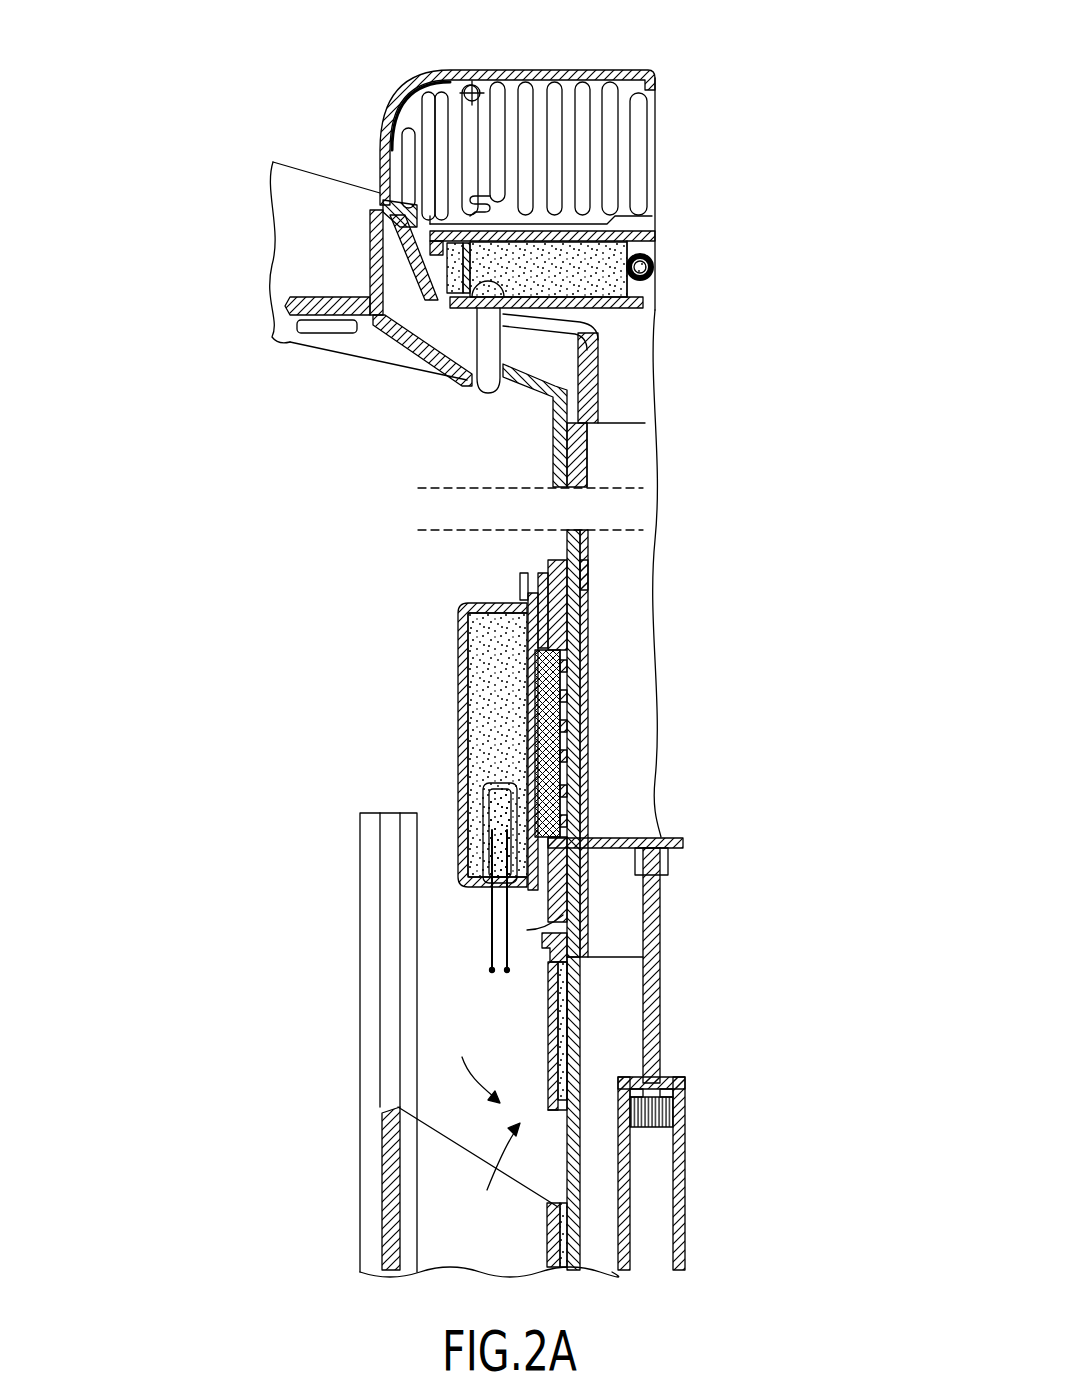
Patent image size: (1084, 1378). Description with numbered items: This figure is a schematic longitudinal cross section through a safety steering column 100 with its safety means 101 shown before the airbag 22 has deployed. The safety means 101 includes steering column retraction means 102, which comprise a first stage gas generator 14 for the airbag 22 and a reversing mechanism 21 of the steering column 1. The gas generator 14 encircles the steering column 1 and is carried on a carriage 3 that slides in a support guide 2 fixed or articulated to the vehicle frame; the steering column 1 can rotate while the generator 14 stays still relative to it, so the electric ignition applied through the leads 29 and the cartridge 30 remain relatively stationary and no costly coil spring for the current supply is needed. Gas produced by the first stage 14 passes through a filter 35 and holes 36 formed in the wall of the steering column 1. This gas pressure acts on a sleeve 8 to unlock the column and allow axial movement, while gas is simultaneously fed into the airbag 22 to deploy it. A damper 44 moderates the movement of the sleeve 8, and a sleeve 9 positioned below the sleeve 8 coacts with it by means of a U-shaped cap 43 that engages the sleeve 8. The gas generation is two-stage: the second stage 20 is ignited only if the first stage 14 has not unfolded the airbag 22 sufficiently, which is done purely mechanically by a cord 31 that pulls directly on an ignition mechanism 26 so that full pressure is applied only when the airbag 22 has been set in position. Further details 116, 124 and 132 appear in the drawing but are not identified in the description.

The steering column 1 is at (567, 1182).
The support guide 2 is at (372, 1205).
The carriage 3 is at (393, 1153).
The sleeve 8 is at (610, 850).
The sleeve 9 is at (548, 1030).
The first stage gas generator 14 is at (473, 678).
The second stage gas generator 20 is at (507, 263).
The reversing mechanism 21 is at (470, 1065).
The airbag 22 is at (618, 137).
The ignition mechanism 26 is at (650, 267).
The leads 29 is at (491, 953).
The cartridge 30 is at (497, 800).
The cord 31 is at (536, 213).
The filter 35 is at (566, 697).
The holes 36 is at (532, 672).
The U-shaped cap 43 is at (547, 950).
The damper 44 is at (645, 1190).
The safety steering column 100 is at (396, 587).
The safety means 101 is at (368, 78).
The steering column retraction means 102 is at (478, 1165).
The connection region 116 is at (557, 560).
The insulation 124 is at (575, 1027).
The potting material 132 is at (493, 638).